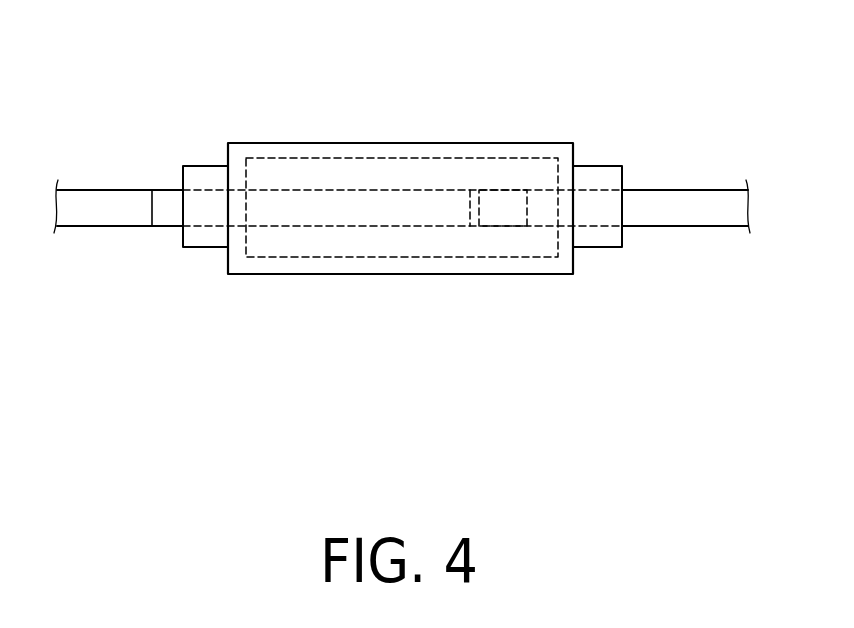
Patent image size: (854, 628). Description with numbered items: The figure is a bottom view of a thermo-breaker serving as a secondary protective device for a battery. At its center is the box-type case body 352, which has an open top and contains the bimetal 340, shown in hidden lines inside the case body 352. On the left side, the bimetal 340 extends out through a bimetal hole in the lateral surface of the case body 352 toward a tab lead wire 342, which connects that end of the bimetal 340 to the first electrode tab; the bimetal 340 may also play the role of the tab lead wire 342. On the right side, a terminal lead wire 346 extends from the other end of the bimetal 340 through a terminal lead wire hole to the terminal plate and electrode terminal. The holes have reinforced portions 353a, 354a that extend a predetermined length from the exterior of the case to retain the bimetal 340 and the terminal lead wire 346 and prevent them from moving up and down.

The bimetal 340 is at (315, 192).
The tab lead wire 342 is at (122, 198).
The terminal lead wire 346 is at (687, 197).
The case body 352 is at (532, 148).
The reinforced portion 353a is at (210, 240).
The reinforced portion 354a is at (603, 240).